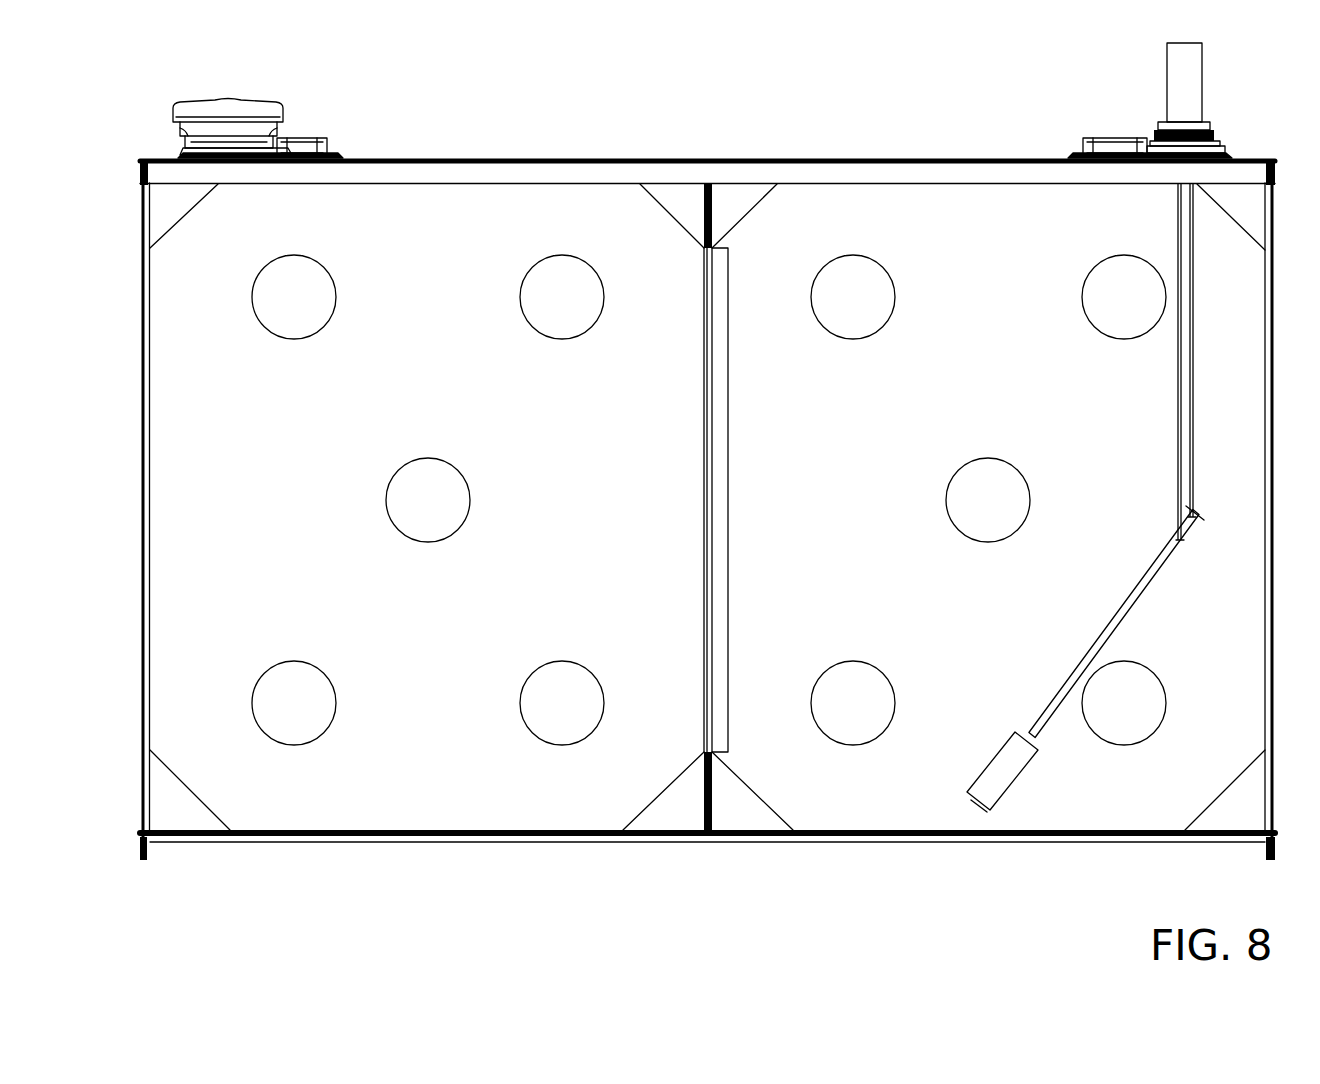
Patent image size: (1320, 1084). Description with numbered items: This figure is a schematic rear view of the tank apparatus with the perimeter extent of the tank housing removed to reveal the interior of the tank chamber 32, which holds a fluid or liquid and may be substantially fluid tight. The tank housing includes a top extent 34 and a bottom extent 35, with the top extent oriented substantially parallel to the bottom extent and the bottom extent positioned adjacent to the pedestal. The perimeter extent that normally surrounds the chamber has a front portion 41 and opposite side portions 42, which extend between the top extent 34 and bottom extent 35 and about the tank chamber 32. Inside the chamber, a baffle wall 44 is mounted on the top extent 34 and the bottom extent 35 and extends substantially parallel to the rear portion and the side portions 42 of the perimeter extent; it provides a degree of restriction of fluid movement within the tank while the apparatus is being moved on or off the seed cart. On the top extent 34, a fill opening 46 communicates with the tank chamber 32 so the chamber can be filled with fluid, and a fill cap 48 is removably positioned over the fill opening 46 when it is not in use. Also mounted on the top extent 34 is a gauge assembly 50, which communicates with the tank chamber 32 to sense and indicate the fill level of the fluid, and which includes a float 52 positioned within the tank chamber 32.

The tank chamber 32 is at (455, 766).
The top extent 34 is at (820, 160).
The bottom extent 35 is at (826, 830).
The front portion 41 is at (295, 708).
The side portions 42 is at (142, 717).
The baffle wall 44 is at (573, 782).
The fill opening 46 is at (296, 129).
The fill cap 48 is at (247, 102).
The gauge assembly 50 is at (1124, 113).
The float 52 is at (998, 778).